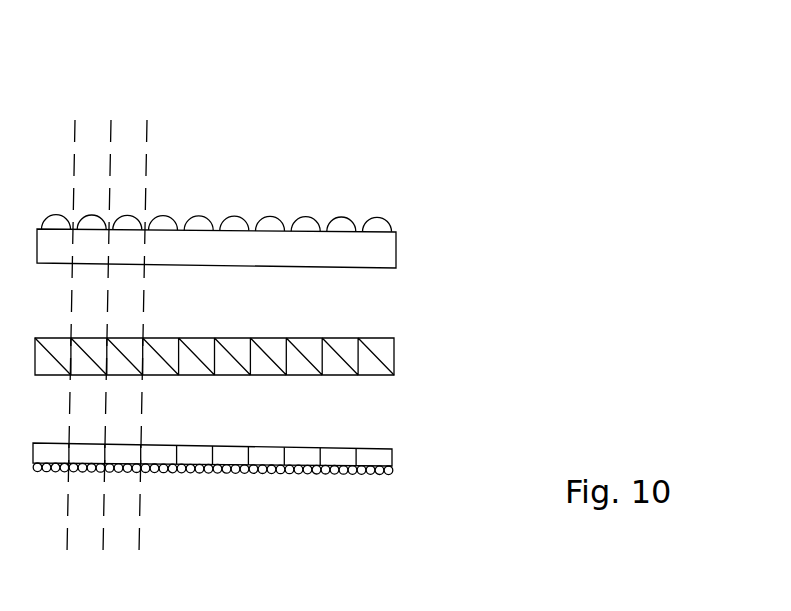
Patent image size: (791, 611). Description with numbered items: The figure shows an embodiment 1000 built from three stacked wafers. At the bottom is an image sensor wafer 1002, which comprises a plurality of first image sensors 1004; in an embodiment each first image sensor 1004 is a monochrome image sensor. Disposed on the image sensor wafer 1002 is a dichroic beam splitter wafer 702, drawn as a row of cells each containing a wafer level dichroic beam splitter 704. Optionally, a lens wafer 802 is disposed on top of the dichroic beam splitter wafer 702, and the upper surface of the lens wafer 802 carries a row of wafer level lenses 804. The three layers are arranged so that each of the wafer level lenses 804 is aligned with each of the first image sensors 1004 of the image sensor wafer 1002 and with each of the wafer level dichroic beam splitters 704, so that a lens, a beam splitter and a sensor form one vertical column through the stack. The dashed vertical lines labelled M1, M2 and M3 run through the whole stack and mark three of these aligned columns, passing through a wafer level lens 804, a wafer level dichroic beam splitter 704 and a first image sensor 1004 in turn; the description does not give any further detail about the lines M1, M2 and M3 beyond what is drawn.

The embodiment 1000 is at (400, 88).
The lens wafer 802 is at (412, 248).
The wafer level lenses 804 is at (273, 216).
The dichroic beam splitter wafer 702 is at (403, 358).
The wafer level dichroic beam splitter 704 is at (265, 340).
The image sensor wafer 1002 is at (405, 457).
The first image sensors 1004 is at (257, 448).
The first axis M1 is at (72, 318).
The second axis M2 is at (112, 314).
The third axis M3 is at (155, 319).